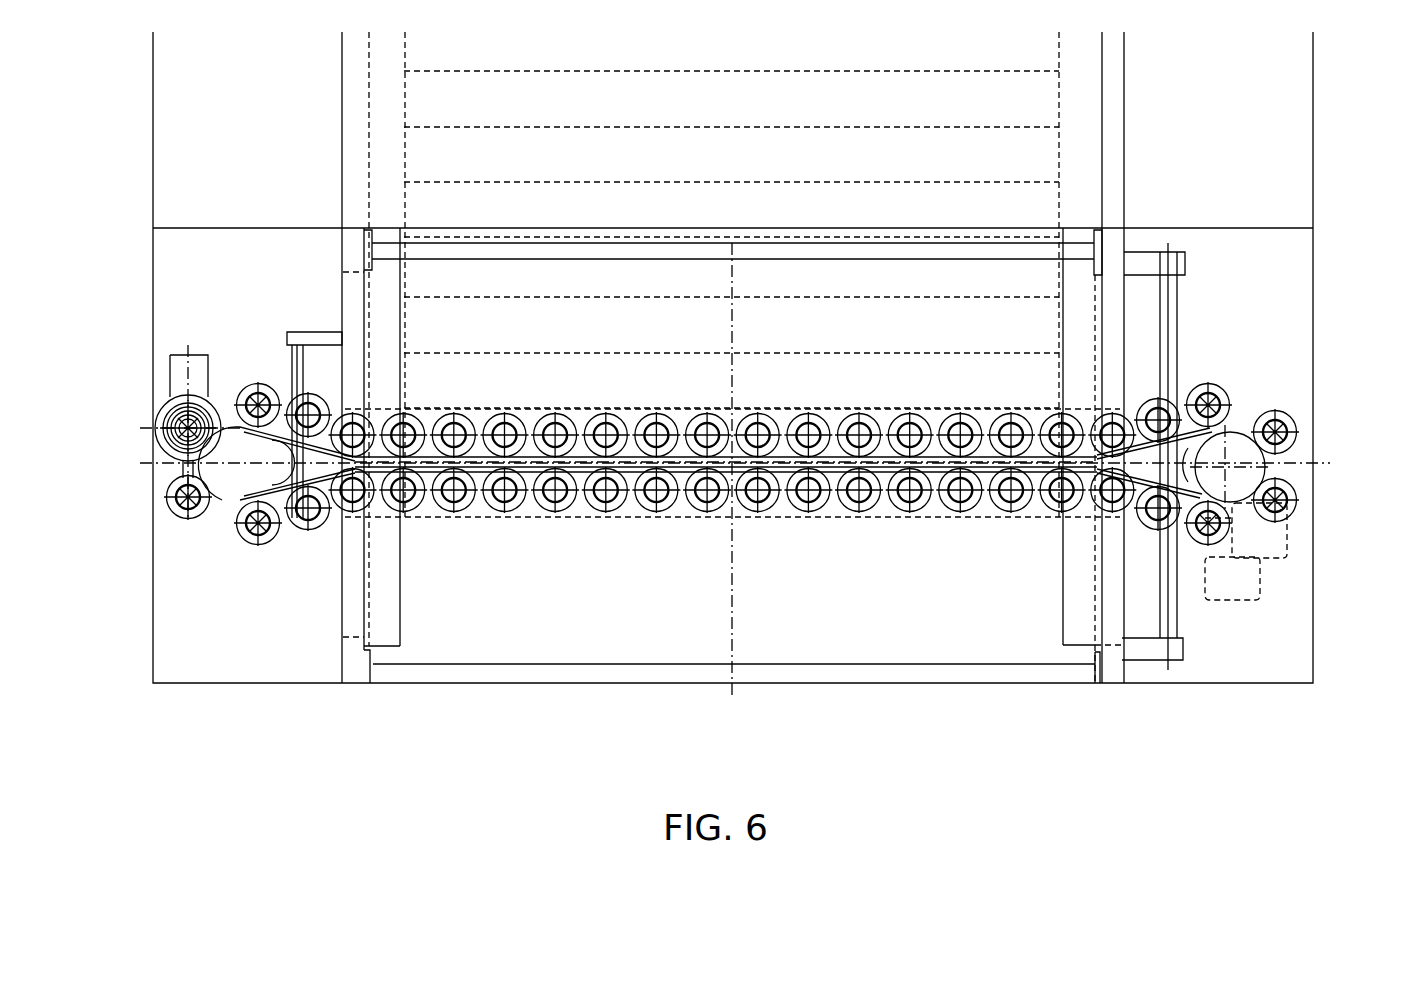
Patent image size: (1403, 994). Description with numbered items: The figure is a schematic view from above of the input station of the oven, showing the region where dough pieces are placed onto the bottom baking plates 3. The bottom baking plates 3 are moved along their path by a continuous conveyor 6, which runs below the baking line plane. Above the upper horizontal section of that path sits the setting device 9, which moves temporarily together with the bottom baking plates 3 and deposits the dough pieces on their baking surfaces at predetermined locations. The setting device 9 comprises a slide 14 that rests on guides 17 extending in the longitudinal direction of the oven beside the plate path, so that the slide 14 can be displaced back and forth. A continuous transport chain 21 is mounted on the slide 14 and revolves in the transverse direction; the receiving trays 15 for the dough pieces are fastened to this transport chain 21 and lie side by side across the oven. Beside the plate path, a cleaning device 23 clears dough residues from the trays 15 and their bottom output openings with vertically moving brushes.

The bottom baking plates 3 is at (1040, 210).
The continuous conveyor 6 is at (390, 650).
The setting device 9 is at (535, 535).
The slide 14 is at (1250, 394).
The receiving trays 15 is at (898, 503).
The guides 17 is at (292, 362).
The transport chain 21 is at (1265, 462).
The cleaning device 23 is at (160, 440).